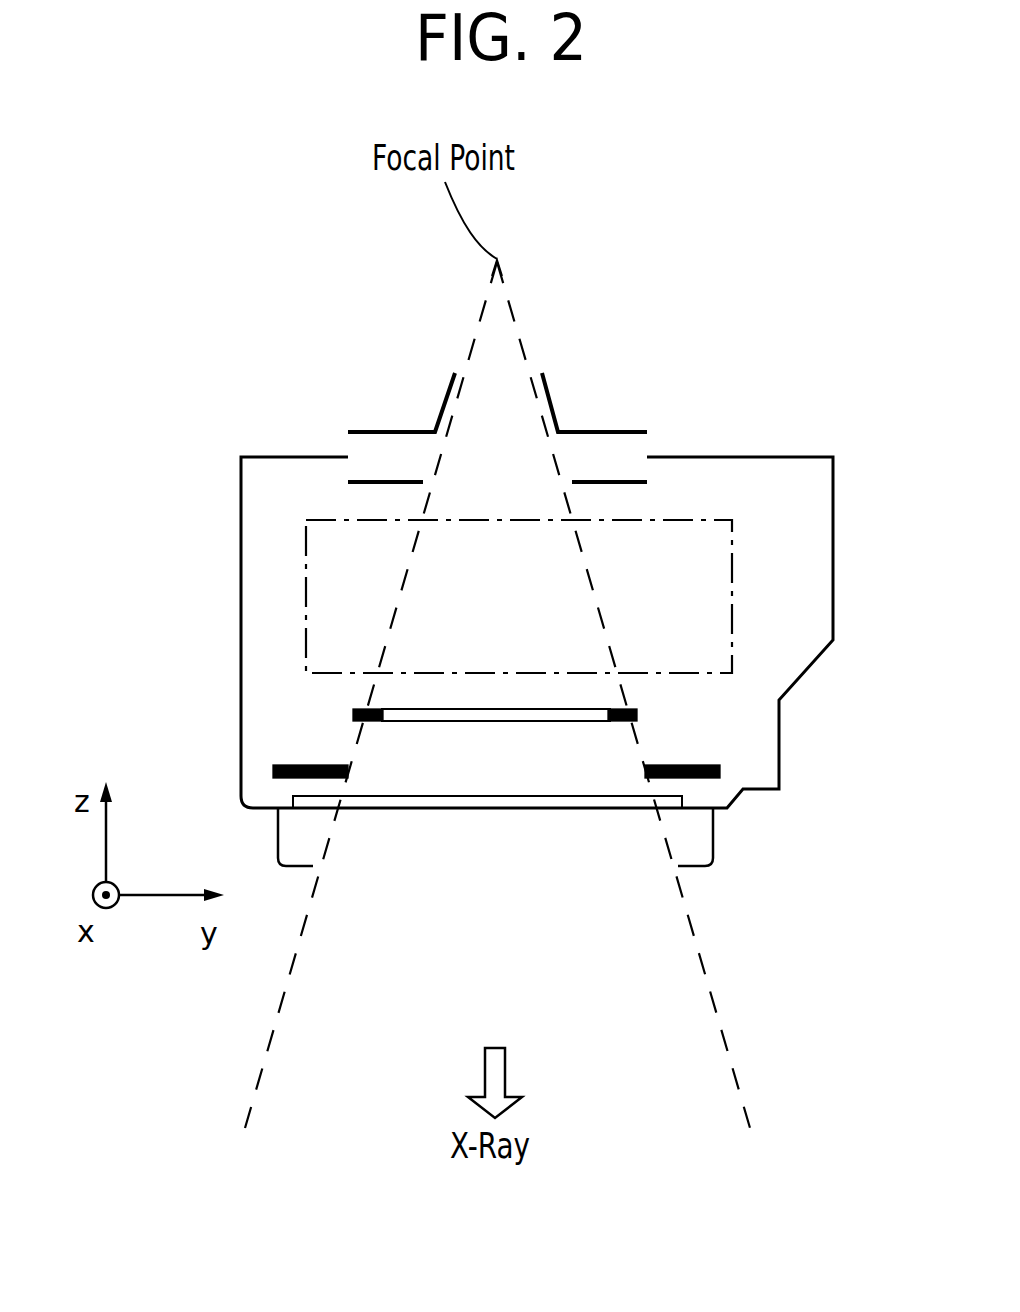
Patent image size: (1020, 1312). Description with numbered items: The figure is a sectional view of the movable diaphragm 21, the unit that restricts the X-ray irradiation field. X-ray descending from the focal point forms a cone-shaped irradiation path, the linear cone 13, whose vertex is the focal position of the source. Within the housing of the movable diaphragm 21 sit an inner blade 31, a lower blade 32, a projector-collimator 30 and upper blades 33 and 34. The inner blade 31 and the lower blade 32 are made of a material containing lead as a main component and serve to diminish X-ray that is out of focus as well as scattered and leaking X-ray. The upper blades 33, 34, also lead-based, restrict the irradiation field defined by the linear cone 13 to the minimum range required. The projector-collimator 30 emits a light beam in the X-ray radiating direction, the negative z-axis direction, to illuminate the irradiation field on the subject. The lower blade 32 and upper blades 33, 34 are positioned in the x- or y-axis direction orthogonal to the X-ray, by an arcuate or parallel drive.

The linear cone 13 is at (700, 958).
The movable diaphragm 21 is at (833, 572).
The projector-collimator 30 is at (733, 542).
The inner blade 31 is at (603, 432).
The lower blade 32 is at (633, 480).
The upper blade 33 is at (637, 715).
The upper blade 34 is at (722, 770).